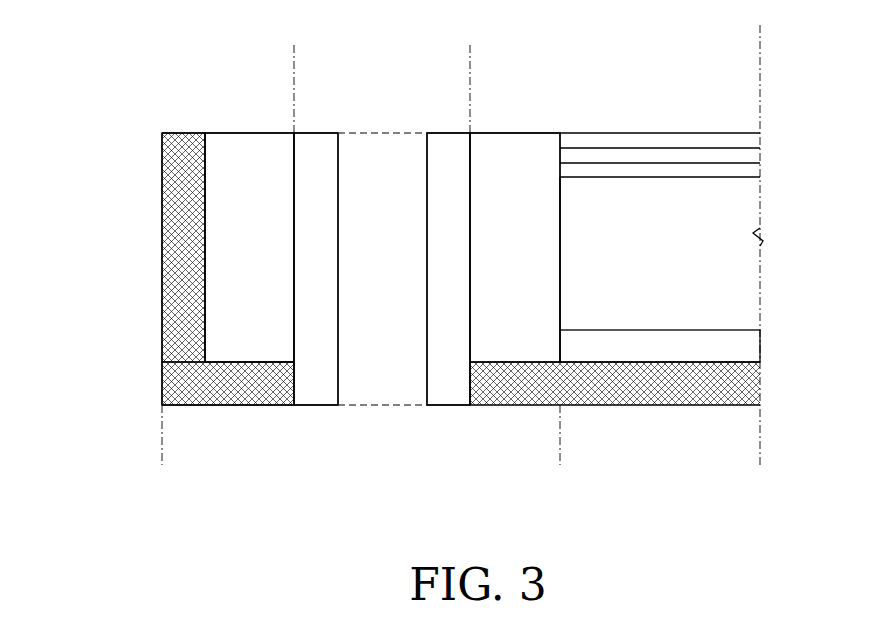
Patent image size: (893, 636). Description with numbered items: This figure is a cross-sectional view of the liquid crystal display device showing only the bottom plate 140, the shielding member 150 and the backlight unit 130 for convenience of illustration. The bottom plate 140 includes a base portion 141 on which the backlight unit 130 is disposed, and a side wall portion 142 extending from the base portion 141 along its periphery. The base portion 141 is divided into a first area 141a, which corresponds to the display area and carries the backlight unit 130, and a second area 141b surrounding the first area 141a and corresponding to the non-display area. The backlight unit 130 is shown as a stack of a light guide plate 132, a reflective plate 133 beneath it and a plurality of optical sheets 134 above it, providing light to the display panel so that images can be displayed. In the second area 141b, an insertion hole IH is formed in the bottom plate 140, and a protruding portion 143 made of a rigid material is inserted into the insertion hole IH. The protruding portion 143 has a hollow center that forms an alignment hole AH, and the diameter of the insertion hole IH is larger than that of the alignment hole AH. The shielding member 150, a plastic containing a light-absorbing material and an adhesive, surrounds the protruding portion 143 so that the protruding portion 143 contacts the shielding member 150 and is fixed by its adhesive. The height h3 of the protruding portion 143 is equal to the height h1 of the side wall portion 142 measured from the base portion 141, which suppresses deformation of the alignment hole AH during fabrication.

The backlight unit 130 is at (715, 247).
The light guide plate 132 is at (730, 272).
The reflective plate 133 is at (690, 346).
The optical sheets 134 is at (766, 133).
The bottom plate 140 is at (77, 376).
The base portion 141 is at (180, 392).
The side wall portion 142 is at (180, 322).
The protruding portion 143 is at (440, 138).
The shielding member 150 is at (250, 152).
The height of the side wall portion h1 is at (191, 133).
The height of the protruding portion h3 is at (454, 348).
The alignment hole AH is at (377, 193).
The insertion hole IH is at (294, 59).
The first area 141a is at (560, 455).
The second area 141b is at (162, 455).